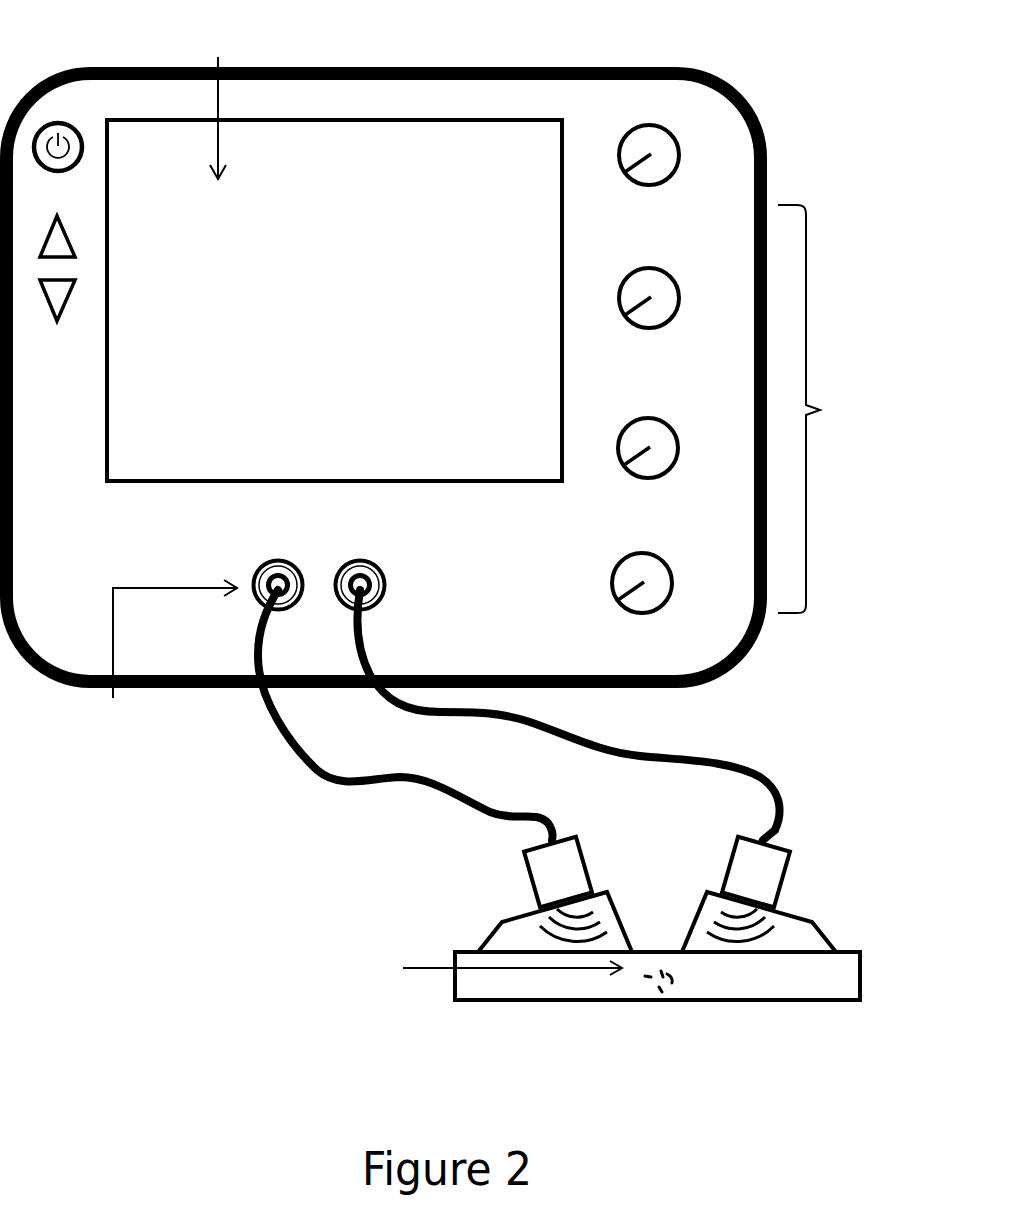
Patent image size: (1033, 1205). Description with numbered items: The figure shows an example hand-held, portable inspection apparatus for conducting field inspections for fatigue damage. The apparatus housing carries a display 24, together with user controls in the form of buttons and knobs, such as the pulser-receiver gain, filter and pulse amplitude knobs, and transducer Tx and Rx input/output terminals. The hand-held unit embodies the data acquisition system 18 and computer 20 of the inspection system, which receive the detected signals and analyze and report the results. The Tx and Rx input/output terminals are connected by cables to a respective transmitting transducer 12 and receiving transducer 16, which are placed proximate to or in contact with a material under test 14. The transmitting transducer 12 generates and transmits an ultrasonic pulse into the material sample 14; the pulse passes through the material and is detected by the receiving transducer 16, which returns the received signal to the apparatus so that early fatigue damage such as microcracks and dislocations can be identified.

The transmitting transducer 12 is at (582, 857).
The material sample 14 is at (887, 992).
The receiving transducer 16 is at (726, 860).
The data acquisition system 18 is at (513, 67).
The computer 20 is at (457, 381).
The display 24 is at (262, 45).